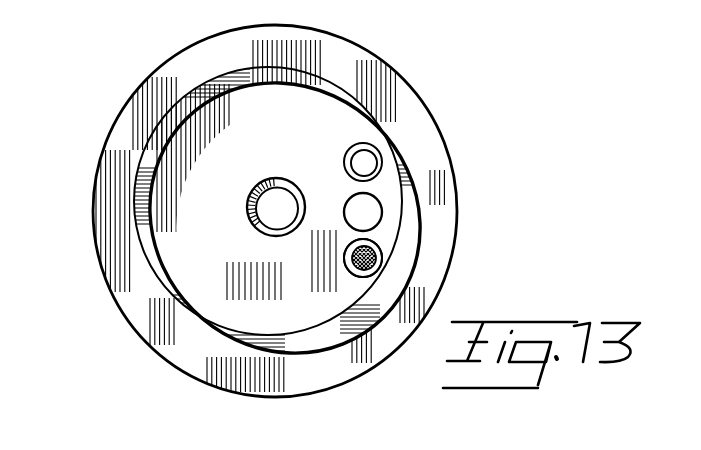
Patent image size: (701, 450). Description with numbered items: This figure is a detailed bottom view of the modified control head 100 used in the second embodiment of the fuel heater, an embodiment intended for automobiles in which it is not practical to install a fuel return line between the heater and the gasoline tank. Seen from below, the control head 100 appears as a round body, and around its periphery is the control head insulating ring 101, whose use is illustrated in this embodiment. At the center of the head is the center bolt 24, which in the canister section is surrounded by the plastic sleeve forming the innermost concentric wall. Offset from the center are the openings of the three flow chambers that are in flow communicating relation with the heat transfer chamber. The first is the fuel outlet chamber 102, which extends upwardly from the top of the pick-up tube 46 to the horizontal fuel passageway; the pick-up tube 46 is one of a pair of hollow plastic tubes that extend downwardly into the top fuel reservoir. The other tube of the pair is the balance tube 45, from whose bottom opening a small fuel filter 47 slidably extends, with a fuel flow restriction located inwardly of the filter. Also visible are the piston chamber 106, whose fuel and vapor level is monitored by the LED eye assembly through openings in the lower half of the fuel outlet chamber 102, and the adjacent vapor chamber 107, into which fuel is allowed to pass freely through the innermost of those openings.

The control head 100 is at (84, 218).
The control head insulating ring 101 is at (157, 142).
The center bolt 24 is at (285, 213).
The pick-up tube 46 is at (373, 166).
The piston chamber 106 is at (382, 161).
The vapor chamber 107 is at (366, 212).
The fuel outlet chamber 102 is at (377, 253).
The fuel filter 47 is at (372, 264).
The balance tube 45 is at (365, 271).